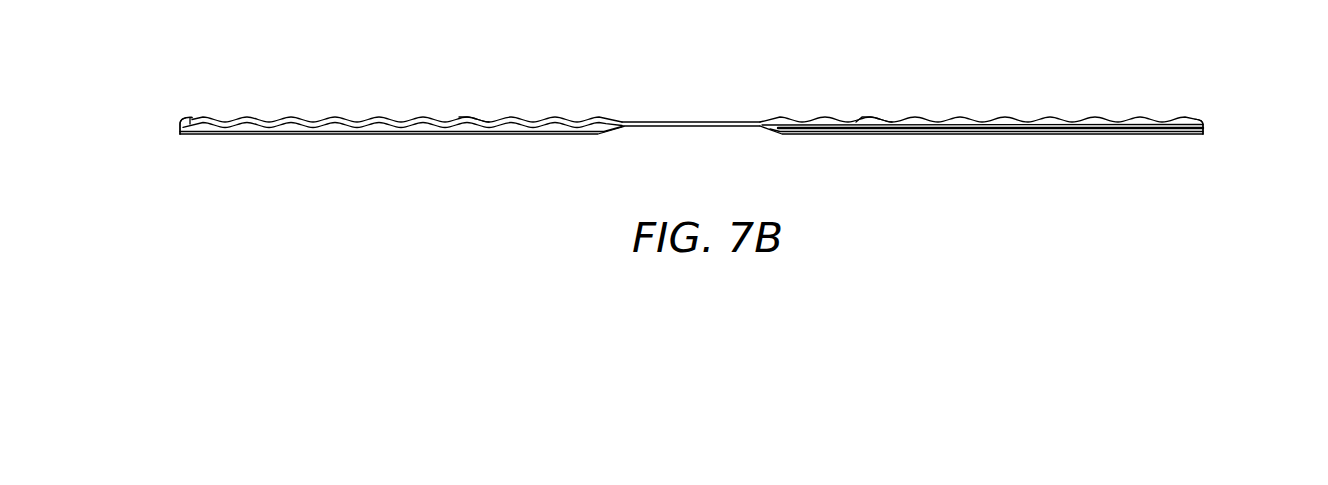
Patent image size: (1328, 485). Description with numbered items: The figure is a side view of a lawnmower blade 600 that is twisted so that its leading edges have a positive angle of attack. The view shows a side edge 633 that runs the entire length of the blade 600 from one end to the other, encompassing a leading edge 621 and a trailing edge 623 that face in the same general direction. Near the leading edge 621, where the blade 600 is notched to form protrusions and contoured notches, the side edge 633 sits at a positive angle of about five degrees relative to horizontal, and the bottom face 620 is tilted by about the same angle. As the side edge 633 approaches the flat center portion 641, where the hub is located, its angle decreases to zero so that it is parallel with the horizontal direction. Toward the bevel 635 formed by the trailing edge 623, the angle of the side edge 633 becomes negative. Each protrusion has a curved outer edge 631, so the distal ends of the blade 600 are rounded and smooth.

The lawnmower blade 600 is at (1192, 90).
The bottom face 620 is at (1205, 121).
The leading edge 621 is at (477, 110).
The trailing edge 623 is at (1060, 148).
The outer edge 631 is at (175, 129).
The side edge 633 is at (380, 118).
The bevel 635 is at (923, 133).
The center portion 641 is at (625, 104).